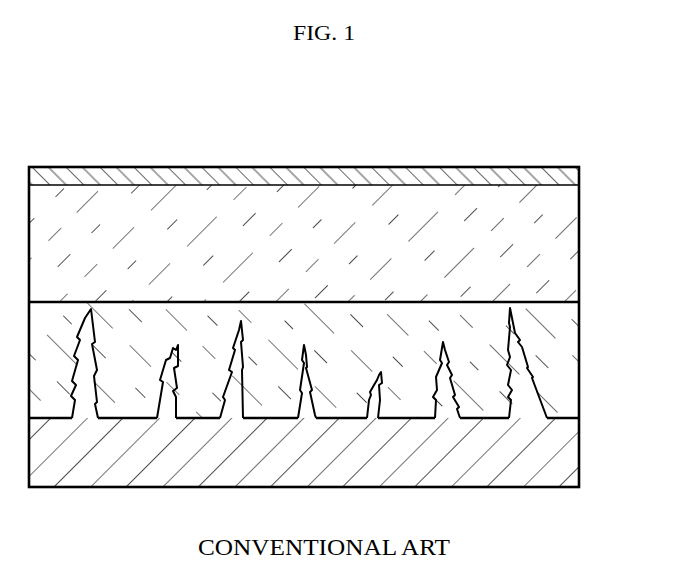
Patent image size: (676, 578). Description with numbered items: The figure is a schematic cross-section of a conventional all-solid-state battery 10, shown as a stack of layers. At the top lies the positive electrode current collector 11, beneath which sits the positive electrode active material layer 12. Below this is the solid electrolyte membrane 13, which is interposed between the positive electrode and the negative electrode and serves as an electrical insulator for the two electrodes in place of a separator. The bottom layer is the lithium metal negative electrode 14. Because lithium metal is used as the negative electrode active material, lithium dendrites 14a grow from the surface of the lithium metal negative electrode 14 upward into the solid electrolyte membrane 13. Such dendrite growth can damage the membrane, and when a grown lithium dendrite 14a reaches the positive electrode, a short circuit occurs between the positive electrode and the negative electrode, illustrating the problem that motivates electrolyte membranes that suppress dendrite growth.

The conventional all-solid-state battery 10 is at (100, 114).
The positive electrode current collector 11 is at (579, 176).
The positive electrode active material layer 12 is at (579, 246).
The solid electrolyte membrane 13 is at (579, 334).
The lithium metal negative electrode 14 is at (579, 454).
The lithium dendrite 14a is at (525, 372).